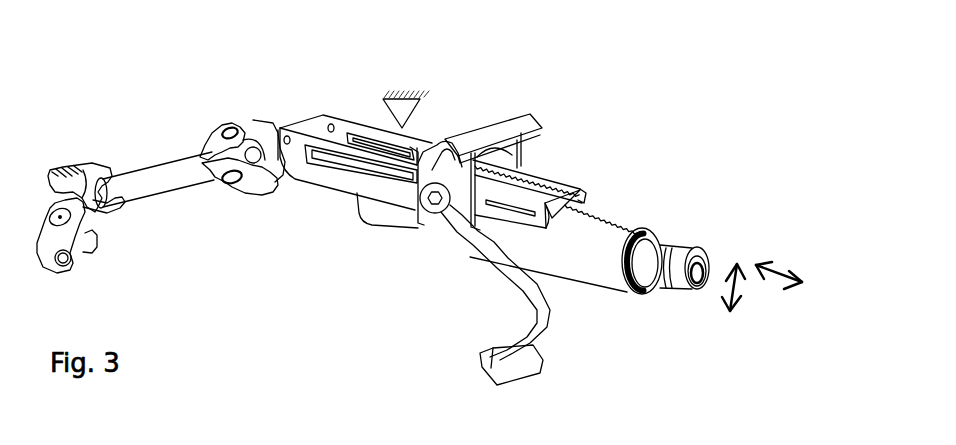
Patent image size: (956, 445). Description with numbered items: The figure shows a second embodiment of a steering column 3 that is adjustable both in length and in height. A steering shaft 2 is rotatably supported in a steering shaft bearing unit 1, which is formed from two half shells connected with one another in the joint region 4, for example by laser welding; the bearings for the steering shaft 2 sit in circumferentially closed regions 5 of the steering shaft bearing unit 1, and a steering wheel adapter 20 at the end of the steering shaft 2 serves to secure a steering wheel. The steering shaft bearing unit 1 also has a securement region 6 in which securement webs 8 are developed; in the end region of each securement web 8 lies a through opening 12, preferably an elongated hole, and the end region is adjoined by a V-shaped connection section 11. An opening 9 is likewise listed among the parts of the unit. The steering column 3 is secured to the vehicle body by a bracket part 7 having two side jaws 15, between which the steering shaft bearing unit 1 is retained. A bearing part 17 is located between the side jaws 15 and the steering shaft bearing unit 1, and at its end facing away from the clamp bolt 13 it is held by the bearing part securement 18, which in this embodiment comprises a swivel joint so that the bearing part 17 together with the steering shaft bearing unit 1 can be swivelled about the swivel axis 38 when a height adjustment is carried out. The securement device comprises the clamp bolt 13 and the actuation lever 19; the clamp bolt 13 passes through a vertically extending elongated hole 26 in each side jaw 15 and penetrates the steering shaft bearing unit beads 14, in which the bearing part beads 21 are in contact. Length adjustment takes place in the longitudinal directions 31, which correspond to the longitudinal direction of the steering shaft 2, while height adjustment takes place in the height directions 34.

The steering shaft bearing unit 1 is at (610, 212).
The steering shaft 2 is at (674, 338).
The steering column 3 is at (505, 96).
The joint region 4 is at (541, 172).
The circumferentially closed region 5 is at (350, 213).
The securement region 6 is at (470, 247).
The bracket part 7 is at (499, 108).
The securement web 8 is at (583, 190).
The opening 9 is at (626, 335).
The connection section 11 is at (439, 237).
The through opening 12 is at (480, 212).
The clamp bolt 13 is at (422, 209).
The steering shaft bearing unit bead 14 is at (494, 282).
The side jaw 15 is at (397, 193).
The bearing part 17 is at (265, 202).
The bearing part securement 18 is at (283, 126).
The actuation lever 19 is at (510, 352).
The steering wheel adapter 20 is at (687, 260).
The bearing part bead 21 is at (362, 117).
The elongated hole 26 is at (429, 83).
The longitudinal directions 31 is at (793, 252).
The height directions 34 is at (748, 318).
The swivel axis 38 is at (389, 96).